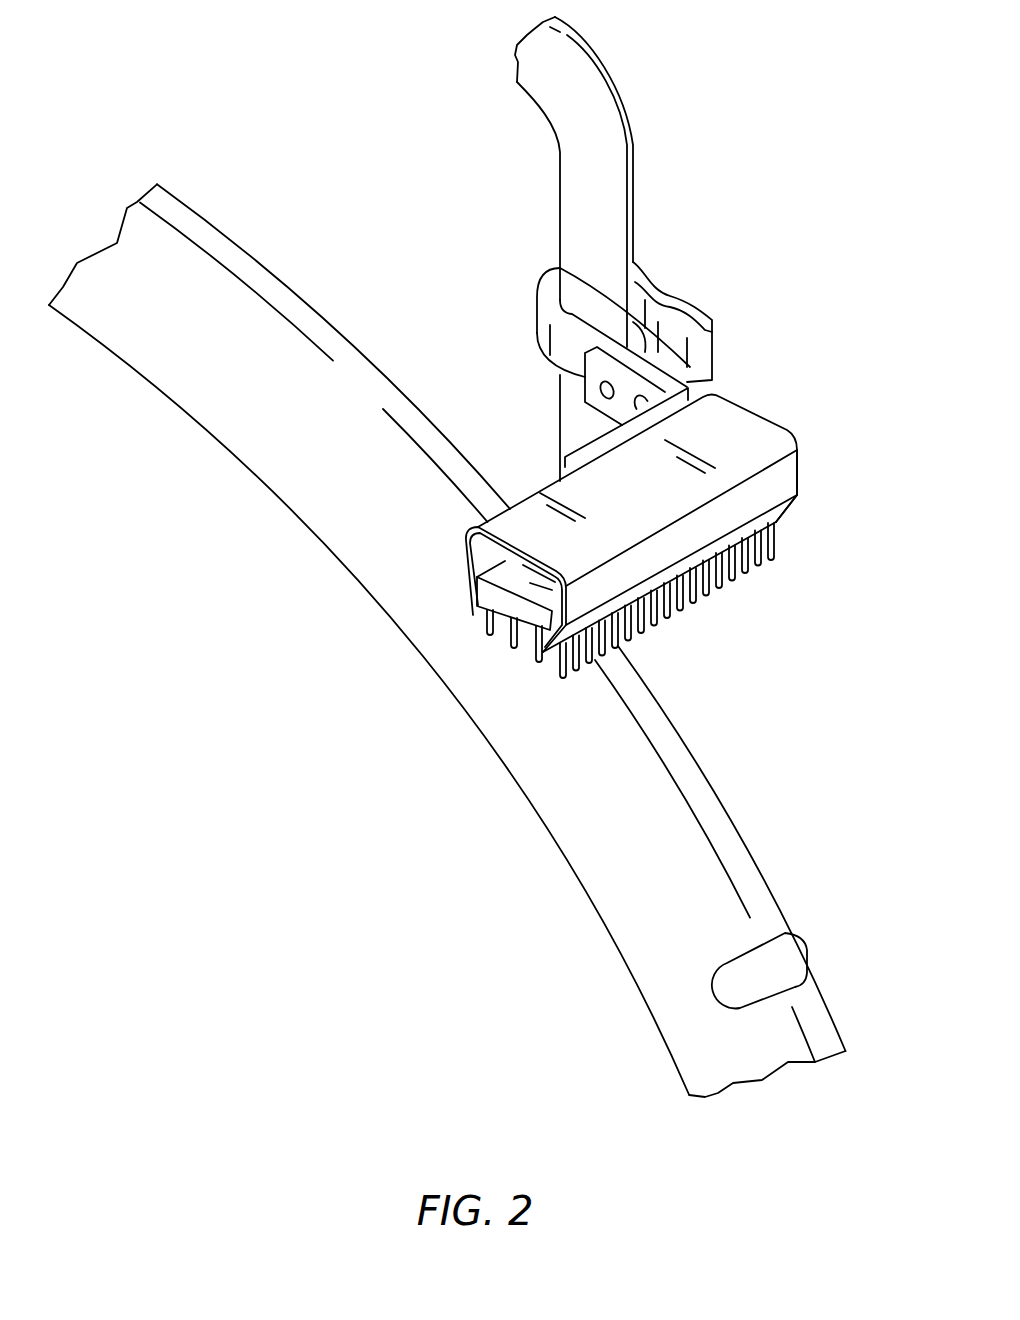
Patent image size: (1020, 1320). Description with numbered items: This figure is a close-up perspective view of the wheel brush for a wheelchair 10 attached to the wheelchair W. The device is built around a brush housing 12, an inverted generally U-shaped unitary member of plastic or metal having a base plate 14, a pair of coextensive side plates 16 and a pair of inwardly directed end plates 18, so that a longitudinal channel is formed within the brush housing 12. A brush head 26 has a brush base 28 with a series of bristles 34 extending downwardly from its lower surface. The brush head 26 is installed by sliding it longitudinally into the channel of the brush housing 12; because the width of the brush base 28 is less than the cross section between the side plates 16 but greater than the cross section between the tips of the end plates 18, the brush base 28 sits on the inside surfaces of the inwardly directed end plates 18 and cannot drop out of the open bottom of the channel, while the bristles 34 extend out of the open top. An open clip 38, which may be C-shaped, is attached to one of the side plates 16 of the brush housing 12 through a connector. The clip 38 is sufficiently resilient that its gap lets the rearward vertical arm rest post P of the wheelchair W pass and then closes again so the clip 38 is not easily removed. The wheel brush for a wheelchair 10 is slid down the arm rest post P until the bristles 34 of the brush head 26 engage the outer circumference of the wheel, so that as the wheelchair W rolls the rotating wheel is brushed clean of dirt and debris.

The wheel brush for a wheelchair 10 is at (633, 569).
The brush housing 12 is at (622, 569).
The base plate 14 is at (717, 417).
The side plates 16 is at (790, 480).
The inwardly directed end plates 18 is at (553, 657).
The brush head 26 is at (491, 618).
The brush base 28 is at (497, 577).
The bristles 34 is at (735, 565).
The clip 38 is at (683, 320).
The arm rest post P is at (600, 217).
The wheelchair W is at (742, 866).